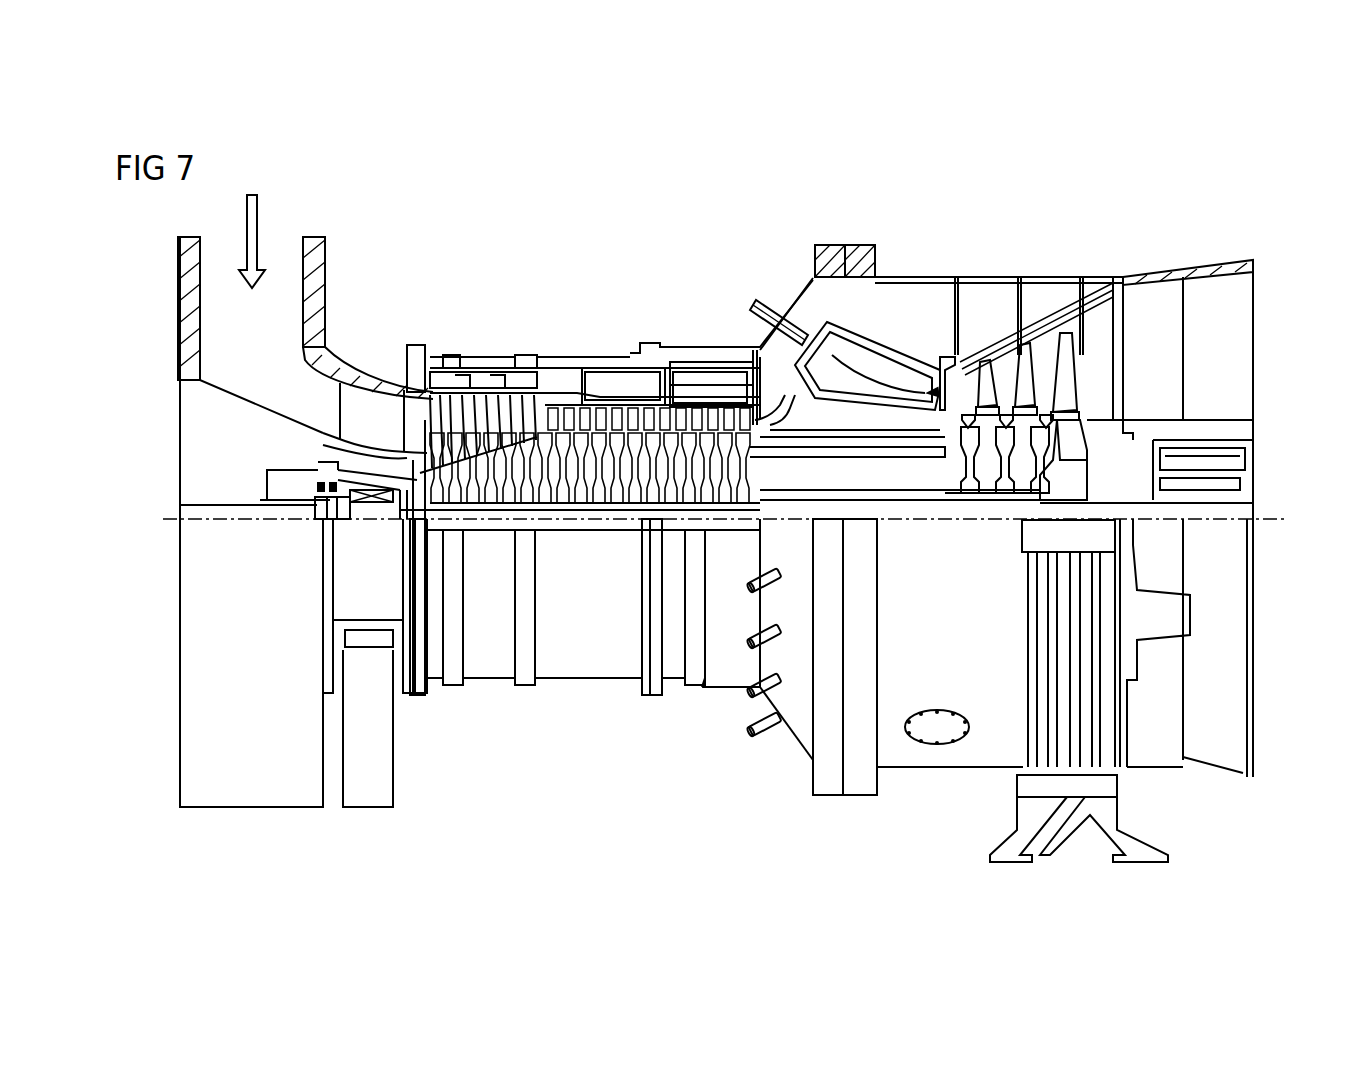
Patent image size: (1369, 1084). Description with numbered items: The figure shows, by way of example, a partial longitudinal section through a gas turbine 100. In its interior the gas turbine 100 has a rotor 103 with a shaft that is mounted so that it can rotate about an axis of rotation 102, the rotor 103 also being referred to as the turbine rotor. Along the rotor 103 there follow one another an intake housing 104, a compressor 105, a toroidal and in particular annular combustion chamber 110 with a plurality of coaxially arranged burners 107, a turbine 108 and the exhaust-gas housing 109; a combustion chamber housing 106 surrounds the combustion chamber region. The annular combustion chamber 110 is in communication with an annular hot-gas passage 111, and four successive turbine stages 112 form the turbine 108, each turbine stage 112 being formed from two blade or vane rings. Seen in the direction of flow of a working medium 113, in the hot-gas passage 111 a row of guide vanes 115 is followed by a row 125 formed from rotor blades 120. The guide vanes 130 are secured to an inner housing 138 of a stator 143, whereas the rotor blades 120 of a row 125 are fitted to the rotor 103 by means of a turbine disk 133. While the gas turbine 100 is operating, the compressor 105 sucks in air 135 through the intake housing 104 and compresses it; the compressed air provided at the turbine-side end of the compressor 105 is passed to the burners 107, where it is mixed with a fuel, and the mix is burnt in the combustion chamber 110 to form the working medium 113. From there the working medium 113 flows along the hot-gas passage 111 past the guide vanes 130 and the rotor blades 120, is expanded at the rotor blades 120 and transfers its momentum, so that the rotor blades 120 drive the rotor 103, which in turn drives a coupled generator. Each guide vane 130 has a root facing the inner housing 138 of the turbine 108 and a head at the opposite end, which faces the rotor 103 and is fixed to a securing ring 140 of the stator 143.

The gas turbine 100 is at (575, 240).
The axis of rotation 102 is at (170, 518).
The rotor 103 is at (782, 488).
The intake housing 104 is at (313, 298).
The compressor 105 is at (500, 338).
The combustion chamber housing 106 is at (902, 340).
The burners 107 is at (753, 303).
The turbine 108 is at (1113, 392).
The exhaust-gas housing 109 is at (1170, 272).
The combustion chamber 110 is at (843, 340).
The hot-gas passage 111 is at (1093, 355).
The turbine stage 112 is at (1113, 392).
The working medium 113 is at (847, 337).
The row of guide vanes 115 is at (983, 404).
The rotor blades 120 is at (1036, 470).
The row of rotor blades 125 is at (1138, 424).
The guide vanes 130 is at (985, 408).
The turbine disk 133 is at (1112, 480).
The air 135 is at (262, 230).
The inner housing 138 is at (988, 315).
The securing ring 140 is at (938, 430).
The stator 143 is at (925, 278).